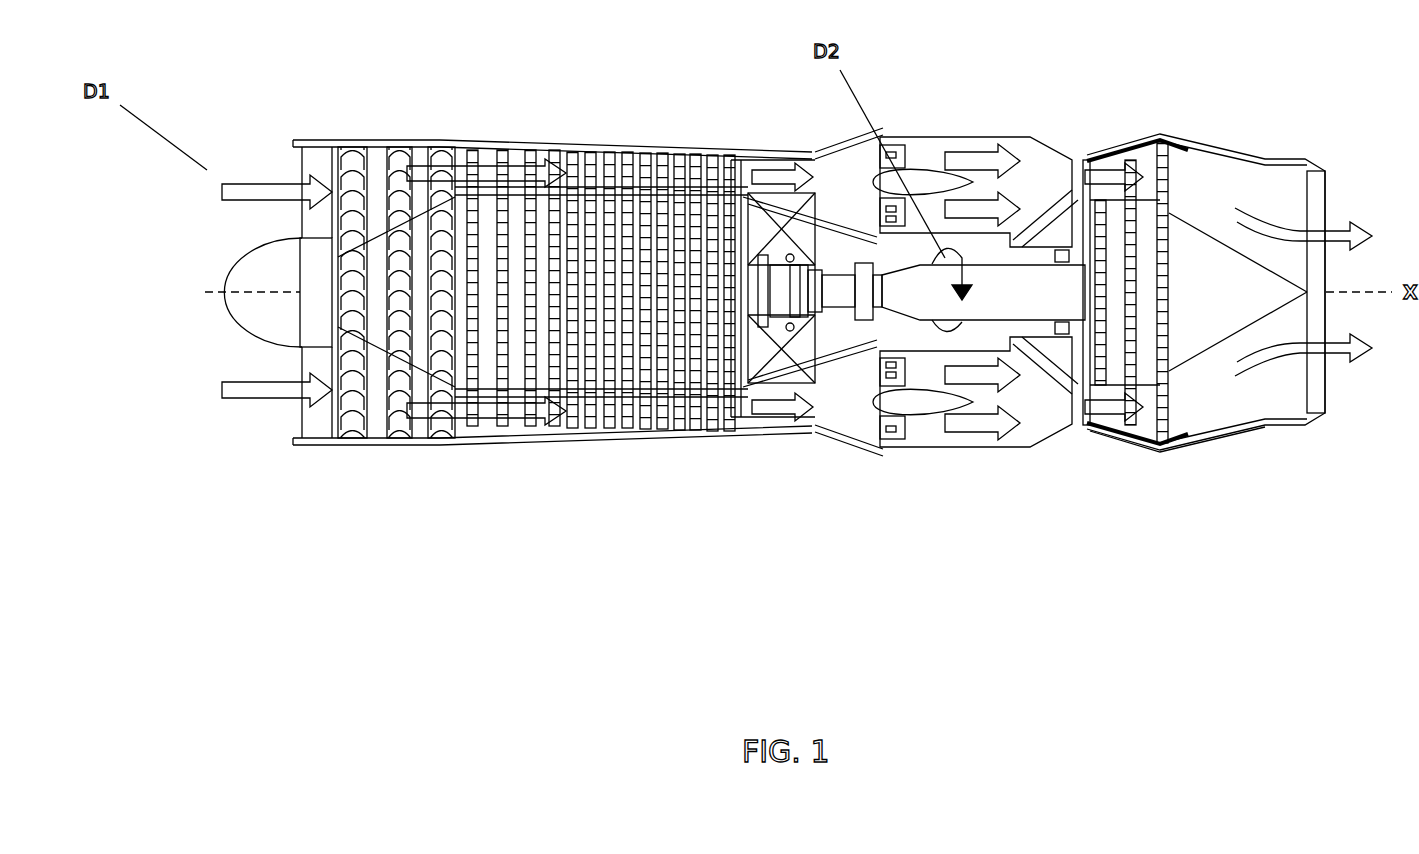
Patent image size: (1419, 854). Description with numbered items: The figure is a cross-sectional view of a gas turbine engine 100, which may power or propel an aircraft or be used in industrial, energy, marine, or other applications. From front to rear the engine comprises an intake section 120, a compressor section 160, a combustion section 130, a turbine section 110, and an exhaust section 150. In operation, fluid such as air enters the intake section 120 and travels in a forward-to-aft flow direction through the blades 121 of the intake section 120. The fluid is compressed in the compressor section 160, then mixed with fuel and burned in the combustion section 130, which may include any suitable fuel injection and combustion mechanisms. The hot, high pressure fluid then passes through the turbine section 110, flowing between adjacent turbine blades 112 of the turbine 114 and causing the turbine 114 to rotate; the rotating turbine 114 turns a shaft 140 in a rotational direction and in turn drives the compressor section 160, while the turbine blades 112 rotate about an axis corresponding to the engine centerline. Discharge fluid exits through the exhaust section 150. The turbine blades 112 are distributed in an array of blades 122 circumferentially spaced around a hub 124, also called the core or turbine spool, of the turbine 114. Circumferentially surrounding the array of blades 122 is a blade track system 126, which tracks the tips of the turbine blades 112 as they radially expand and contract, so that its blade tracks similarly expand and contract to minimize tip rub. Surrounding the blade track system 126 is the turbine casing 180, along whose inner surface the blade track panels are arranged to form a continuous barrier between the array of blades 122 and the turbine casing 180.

The gas turbine engine 100 is at (852, 510).
The turbine section 110 is at (1123, 90).
The turbine blades 112 is at (1170, 263).
The turbine 114 is at (1200, 308).
The intake section 120 is at (272, 425).
The blades 121 is at (383, 160).
The array of blades 122 is at (1128, 462).
The hub 124 is at (1170, 218).
The blade track system 126 is at (1137, 143).
The combustion section 130 is at (1028, 152).
The shaft 140 is at (993, 292).
The exhaust section 150 is at (1326, 201).
The compressor section 160 is at (593, 122).
The turbine casing 180 is at (1207, 140).